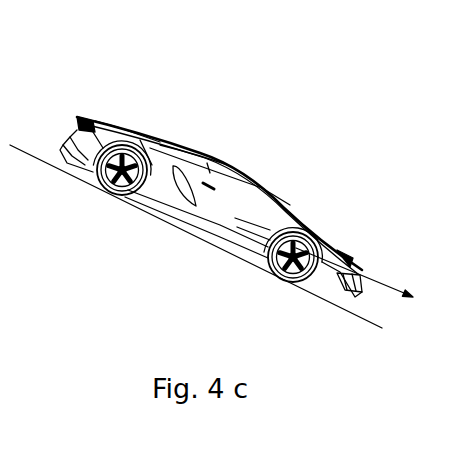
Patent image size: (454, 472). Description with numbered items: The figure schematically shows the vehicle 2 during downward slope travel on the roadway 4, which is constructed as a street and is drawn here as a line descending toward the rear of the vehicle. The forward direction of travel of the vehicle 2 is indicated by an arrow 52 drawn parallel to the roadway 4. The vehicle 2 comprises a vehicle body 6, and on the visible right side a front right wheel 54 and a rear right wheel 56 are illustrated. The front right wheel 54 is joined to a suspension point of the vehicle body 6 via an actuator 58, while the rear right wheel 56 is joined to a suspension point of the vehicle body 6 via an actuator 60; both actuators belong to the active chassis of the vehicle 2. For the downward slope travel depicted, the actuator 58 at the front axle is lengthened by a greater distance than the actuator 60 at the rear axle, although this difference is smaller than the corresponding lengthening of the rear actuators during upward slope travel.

The vehicle 2 is at (240, 148).
The roadway 4 is at (203, 241).
The vehicle body 6 is at (194, 150).
The arrow 52 is at (391, 288).
The front right wheel 54 is at (286, 283).
The rear right wheel 56 is at (114, 199).
The actuator 58 is at (307, 223).
The actuator 60 is at (137, 140).